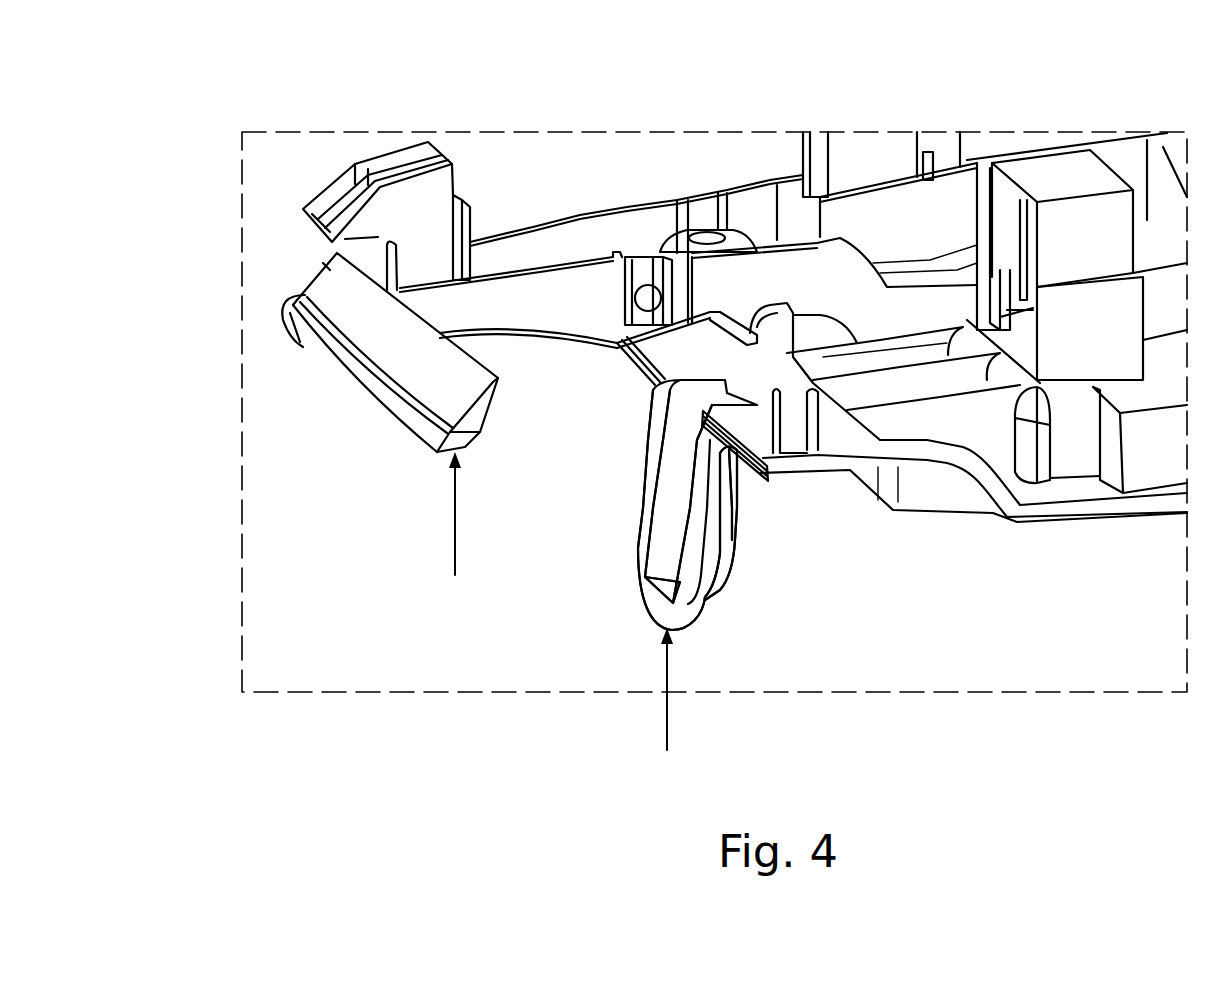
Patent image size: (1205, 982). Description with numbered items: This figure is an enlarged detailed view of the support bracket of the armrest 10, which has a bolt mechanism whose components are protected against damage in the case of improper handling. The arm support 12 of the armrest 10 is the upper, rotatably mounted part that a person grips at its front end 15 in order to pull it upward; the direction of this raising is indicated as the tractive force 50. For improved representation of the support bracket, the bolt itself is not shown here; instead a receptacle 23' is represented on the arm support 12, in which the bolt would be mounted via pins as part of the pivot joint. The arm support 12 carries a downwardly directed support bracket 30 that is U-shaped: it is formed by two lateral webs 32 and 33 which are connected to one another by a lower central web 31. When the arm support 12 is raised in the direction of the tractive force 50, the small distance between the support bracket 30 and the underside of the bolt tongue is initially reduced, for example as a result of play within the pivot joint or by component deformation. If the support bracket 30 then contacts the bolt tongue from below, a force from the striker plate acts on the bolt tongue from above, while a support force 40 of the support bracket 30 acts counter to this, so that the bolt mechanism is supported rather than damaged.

The armrest 10 is at (712, 150).
The arm support 12 is at (1022, 510).
The front end 15 is at (333, 373).
The receptacle 23' is at (664, 231).
The support bracket 30 is at (622, 523).
The lower central web 31 is at (665, 594).
The lateral web 32 is at (648, 455).
The lateral web 33 is at (713, 528).
The support force 40 is at (668, 672).
The tractive force 50 is at (455, 500).